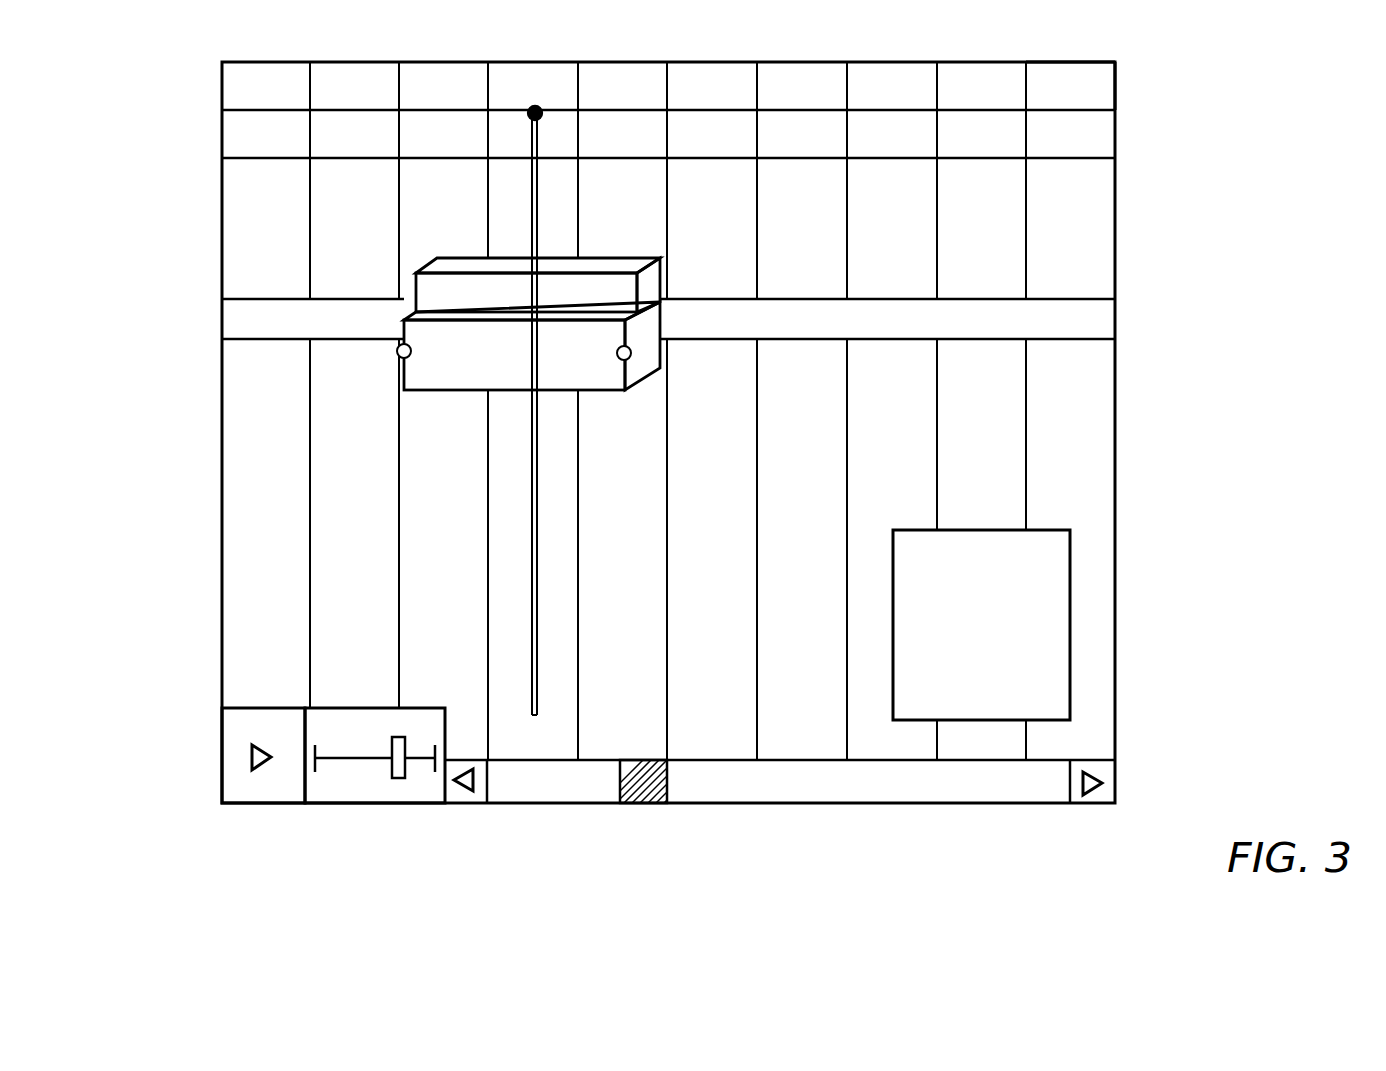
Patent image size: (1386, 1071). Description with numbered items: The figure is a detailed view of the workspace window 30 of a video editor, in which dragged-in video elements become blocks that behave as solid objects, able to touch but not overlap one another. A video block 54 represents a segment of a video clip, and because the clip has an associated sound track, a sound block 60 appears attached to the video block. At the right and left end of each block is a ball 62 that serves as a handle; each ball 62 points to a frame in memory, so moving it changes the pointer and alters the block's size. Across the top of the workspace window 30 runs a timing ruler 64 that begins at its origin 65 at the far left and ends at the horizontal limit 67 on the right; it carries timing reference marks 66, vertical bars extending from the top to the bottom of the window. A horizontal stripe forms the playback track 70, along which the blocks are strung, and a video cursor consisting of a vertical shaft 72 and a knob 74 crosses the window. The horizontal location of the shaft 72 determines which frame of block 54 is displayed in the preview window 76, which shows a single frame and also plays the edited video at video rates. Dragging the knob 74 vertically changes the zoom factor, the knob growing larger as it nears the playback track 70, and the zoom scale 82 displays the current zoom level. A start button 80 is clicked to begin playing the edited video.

The workspace window 30 is at (1206, 81).
The block 54 is at (648, 378).
The sound block 60 is at (566, 279).
The ball 62 is at (400, 358).
The timing ruler 64 is at (1102, 81).
The origin 65 is at (230, 87).
The timing reference marks 66 is at (668, 435).
The horizontal limit 67 is at (704, 128).
The playback track 70 is at (668, 296).
The vertical shaft 72 is at (575, 414).
The knob 74 is at (563, 67).
The preview window 76 is at (1034, 625).
The start button 80 is at (263, 777).
The zoom scale 82 is at (375, 777).